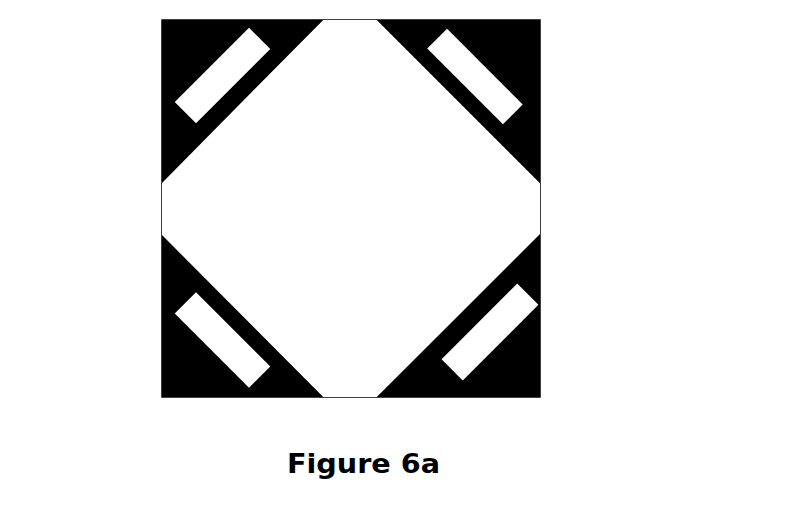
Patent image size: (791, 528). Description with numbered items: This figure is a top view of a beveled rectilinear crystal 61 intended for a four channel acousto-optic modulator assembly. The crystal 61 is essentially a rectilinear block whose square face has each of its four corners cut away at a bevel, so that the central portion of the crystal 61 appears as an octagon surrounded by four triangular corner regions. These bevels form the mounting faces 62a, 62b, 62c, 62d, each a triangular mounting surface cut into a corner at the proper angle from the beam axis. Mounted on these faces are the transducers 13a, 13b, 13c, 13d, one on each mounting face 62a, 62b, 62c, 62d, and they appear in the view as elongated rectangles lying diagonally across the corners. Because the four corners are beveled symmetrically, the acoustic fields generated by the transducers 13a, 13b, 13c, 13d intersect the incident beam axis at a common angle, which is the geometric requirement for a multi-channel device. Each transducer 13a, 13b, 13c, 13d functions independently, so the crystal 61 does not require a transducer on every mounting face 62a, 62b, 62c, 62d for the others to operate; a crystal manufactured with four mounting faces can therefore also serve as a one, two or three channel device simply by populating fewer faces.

The beveled rectilinear crystal 61 is at (145, 197).
The mounting face 62a is at (160, 285).
The mounting face 62b is at (160, 43).
The mounting face 62c is at (541, 40).
The mounting face 62d is at (541, 358).
The transducer 13a is at (230, 352).
The transducer 13b is at (200, 101).
The transducer 13c is at (468, 77).
The transducer 13d is at (483, 342).